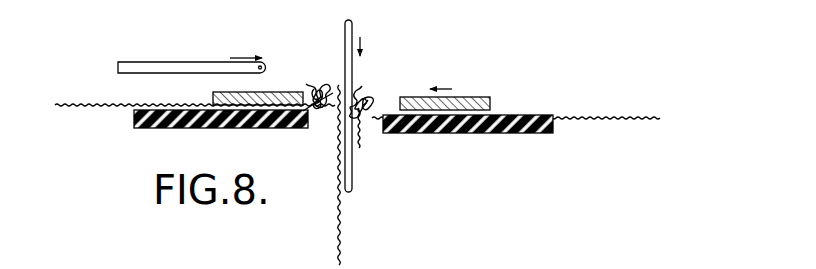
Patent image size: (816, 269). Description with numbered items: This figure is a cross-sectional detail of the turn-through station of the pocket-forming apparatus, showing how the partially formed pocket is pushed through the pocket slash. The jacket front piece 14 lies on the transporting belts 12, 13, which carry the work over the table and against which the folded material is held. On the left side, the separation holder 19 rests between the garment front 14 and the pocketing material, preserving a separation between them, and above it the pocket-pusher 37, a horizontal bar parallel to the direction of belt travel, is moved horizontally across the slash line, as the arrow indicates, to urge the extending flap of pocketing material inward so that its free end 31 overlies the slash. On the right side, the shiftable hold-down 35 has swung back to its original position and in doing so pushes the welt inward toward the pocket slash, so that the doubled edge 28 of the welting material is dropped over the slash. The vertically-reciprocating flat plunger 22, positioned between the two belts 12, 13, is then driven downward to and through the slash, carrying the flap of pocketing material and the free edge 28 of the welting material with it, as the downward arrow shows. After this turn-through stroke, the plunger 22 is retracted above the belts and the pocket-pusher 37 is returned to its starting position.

The belt 12 is at (470, 133).
The belt 13 is at (206, 128).
The jacket front piece 14 is at (82, 98).
The separation holder 19 is at (212, 98).
The vertically-reciprocating flat plunger 22 is at (345, 52).
The edge of the pocket blank 28 is at (360, 140).
The free end of the pocketing material 31 is at (341, 262).
The shiftable hold-down 35 is at (472, 97).
The pocket-pusher 37 is at (180, 62).